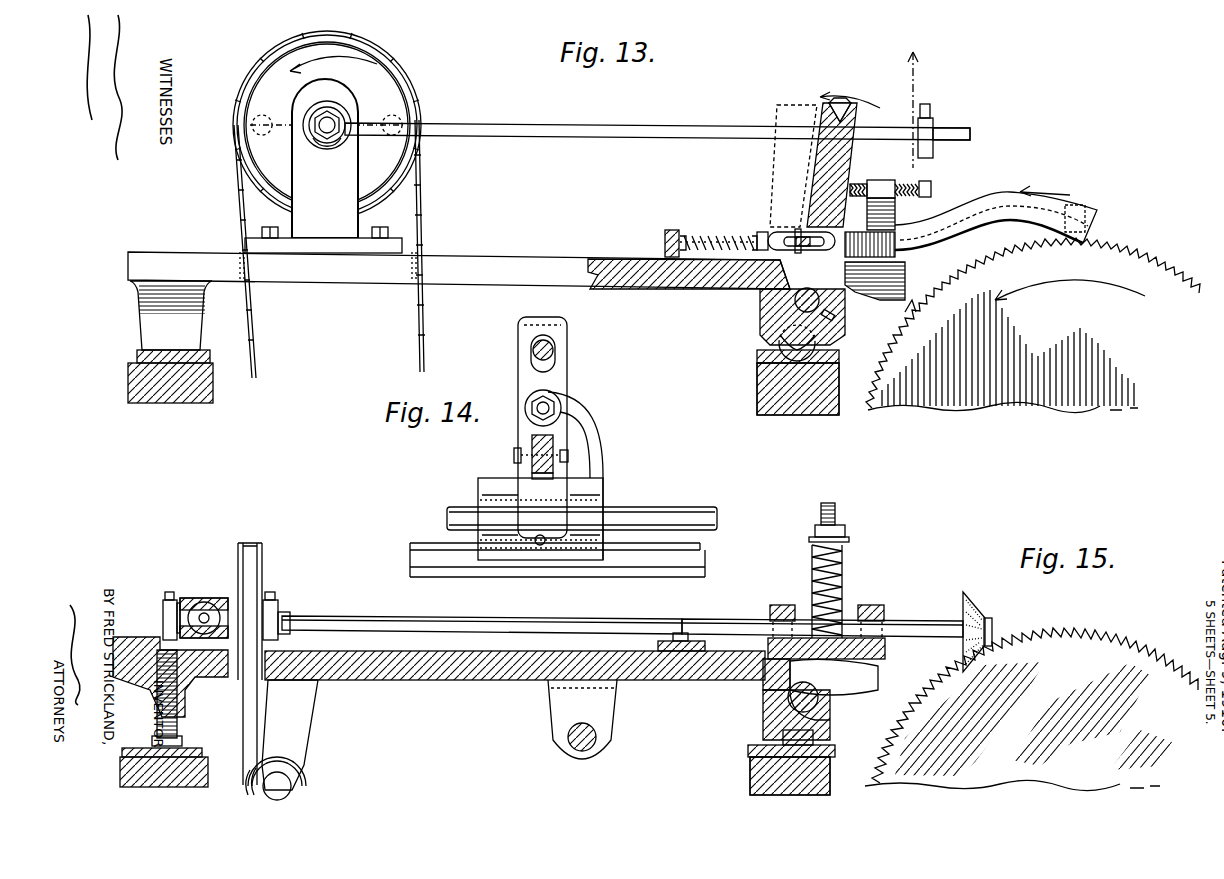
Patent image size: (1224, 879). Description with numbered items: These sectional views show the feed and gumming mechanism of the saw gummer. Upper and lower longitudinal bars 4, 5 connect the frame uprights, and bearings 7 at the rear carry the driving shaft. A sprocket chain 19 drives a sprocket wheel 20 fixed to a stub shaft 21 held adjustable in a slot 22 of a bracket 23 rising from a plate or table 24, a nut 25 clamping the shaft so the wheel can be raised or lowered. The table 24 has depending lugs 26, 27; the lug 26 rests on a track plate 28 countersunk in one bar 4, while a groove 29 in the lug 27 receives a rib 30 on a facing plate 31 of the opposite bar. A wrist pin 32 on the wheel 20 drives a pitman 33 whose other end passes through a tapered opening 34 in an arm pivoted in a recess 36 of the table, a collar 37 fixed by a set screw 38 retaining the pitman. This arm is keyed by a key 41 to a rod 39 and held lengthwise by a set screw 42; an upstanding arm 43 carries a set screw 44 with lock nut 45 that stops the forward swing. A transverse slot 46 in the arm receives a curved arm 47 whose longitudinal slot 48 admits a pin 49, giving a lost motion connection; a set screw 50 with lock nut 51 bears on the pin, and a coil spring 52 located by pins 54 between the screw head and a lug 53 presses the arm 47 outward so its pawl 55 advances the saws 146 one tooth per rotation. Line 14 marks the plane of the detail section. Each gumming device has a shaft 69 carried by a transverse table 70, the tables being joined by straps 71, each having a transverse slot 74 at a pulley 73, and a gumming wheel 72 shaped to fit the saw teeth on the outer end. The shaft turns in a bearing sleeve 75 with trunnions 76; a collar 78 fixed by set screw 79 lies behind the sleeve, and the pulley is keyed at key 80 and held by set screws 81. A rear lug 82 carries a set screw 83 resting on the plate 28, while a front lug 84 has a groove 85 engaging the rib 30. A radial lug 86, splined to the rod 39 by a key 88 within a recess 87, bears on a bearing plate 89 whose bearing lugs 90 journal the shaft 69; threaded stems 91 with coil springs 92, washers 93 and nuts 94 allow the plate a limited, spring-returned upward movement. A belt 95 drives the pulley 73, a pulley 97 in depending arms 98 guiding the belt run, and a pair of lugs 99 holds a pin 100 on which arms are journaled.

In FIG. 13, the upper longitudinal bar 4 is at (128, 380).
In FIG. 15, the upper longitudinal bar 4 is at (130, 756).
In FIG. 14, the lower longitudinal bar 5 is at (518, 388).
In FIG. 15, the bearing 7 is at (700, 641).
In FIG. 13, the section line 14 is at (914, 176).
In FIG. 13, the sprocket chain 19 is at (254, 340).
In FIG. 13, the sprocket wheel 20 is at (396, 80).
In FIG. 13, the stub shaft 21 is at (331, 120).
In FIG. 13, the slot 22 is at (327, 139).
In FIG. 13, the bracket 23 is at (323, 166).
In FIG. 13, the plate or table 24 is at (500, 258).
In FIG. 13, the nut 25 is at (347, 124).
In FIG. 13, the depending lug 26 is at (140, 320).
In FIG. 13, the depending lug 27 is at (777, 343).
In FIG. 13, the facing plate or track plate 28 is at (137, 356).
In FIG. 15, the facing plate or track plate 28 is at (186, 748).
In FIG. 13, the groove 29 is at (758, 358).
In FIG. 13, the rib 30 is at (830, 342).
In FIG. 14, the rib 30 is at (412, 542).
In FIG. 15, the rib 30 is at (752, 750).
In FIG. 13, the facing plate 31 is at (758, 378).
In FIG. 14, the facing plate 31 is at (412, 565).
In FIG. 15, the facing plate 31 is at (752, 770).
In FIG. 14, the wrist pin 32 is at (540, 546).
In FIG. 13, the pitman 33 is at (622, 116).
In FIG. 14, the pitman 33 is at (533, 350).
In FIG. 13, the opening 34 is at (860, 112).
In FIG. 14, the opening 34 is at (531, 362).
In FIG. 13, the recess 36 is at (762, 322).
In FIG. 14, the recess 36 is at (525, 560).
In FIG. 13, the collar 37 is at (934, 122).
In FIG. 13, the set screw 38 is at (926, 104).
In FIG. 13, the rod 39 is at (905, 270).
In FIG. 14, the rod 39 is at (648, 510).
In FIG. 15, the rod 39 is at (822, 712).
In FIG. 13, the key 41 is at (820, 300).
In FIG. 13, the set screw 42 is at (836, 316).
In FIG. 13, the upstanding arm 43 is at (878, 180).
In FIG. 14, the upstanding arm 43 is at (584, 476).
In FIG. 13, the set screw 44 is at (930, 186).
In FIG. 14, the set screw 44 is at (556, 408).
In FIG. 13, the lock nut 45 is at (900, 186).
In FIG. 14, the lock nut 45 is at (530, 420).
In FIG. 13, the transverse slot 46 is at (796, 235).
In FIG. 13, the curved arm 47 is at (1005, 190).
In FIG. 14, the curved arm 47 is at (556, 440).
In FIG. 13, the longitudinal slot 48 is at (867, 230).
In FIG. 13, the pin 49 is at (812, 236).
In FIG. 14, the pin 49 is at (514, 458).
In FIG. 13, the set screw 50 is at (758, 236).
In FIG. 13, the lock nut 51 is at (790, 232).
In FIG. 13, the coil spring 52 is at (690, 234).
In FIG. 13, the lug 53 is at (665, 240).
In FIG. 13, the pin 54 is at (676, 236).
In FIG. 13, the pawl 55 is at (840, 100).
In FIG. 15, the shaft 69 is at (618, 617).
In FIG. 15, the plate or table 70 is at (455, 682).
In FIG. 15, the strap 71 is at (118, 636).
In FIG. 15, the gumming wheel 72 is at (966, 594).
In FIG. 15, the pulley 73 is at (262, 556).
In FIG. 15, the slot 74 is at (315, 620).
In FIG. 15, the bearing sleeve 75 is at (192, 598).
In FIG. 15, the trunnion 76 is at (212, 598).
In FIG. 15, the collar 78 is at (168, 600).
In FIG. 15, the set screw 79 is at (170, 592).
In FIG. 15, the key 80 is at (290, 614).
In FIG. 15, the set screw 81 is at (276, 596).
In FIG. 15, the depending lug 82 is at (178, 690).
In FIG. 15, the set screw 83 is at (182, 741).
In FIG. 15, the depending lug 84 is at (763, 712).
In FIG. 15, the transverse groove 85 is at (813, 740).
In FIG. 15, the radial lug 86 is at (878, 672).
In FIG. 15, the recess 87 is at (763, 692).
In FIG. 15, the key 88 is at (818, 700).
In FIG. 15, the bearing plate 89 is at (886, 650).
In FIG. 15, the bearing lug 90 is at (783, 605).
In FIG. 15, the threaded stem 91 is at (834, 504).
In FIG. 15, the coil spring 92 is at (846, 560).
In FIG. 15, the washer 93 is at (845, 532).
In FIG. 15, the nut 94 is at (845, 525).
In FIG. 15, the belt 95 is at (233, 774).
In FIG. 15, the pulley 97 is at (302, 765).
In FIG. 15, the arm 98 is at (302, 712).
In FIG. 15, the depending lug 99 is at (554, 716).
In FIG. 15, the pin 100 is at (568, 740).
In FIG. 13, the saw 146 is at (1033, 319).
In FIG. 15, the saw 146 is at (1031, 696).